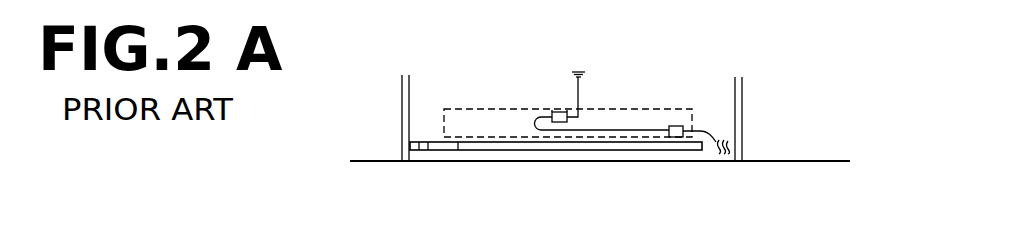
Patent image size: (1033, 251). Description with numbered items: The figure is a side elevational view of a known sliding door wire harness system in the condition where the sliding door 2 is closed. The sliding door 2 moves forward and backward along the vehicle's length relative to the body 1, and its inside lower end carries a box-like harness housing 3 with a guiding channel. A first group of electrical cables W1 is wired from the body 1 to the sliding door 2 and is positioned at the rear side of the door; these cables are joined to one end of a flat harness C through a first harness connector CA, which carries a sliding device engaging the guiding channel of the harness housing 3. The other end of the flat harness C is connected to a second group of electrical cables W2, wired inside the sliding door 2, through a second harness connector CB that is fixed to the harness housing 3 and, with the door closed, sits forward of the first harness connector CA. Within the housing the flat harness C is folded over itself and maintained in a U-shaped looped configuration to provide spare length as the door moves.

The vehicle body 1 is at (383, 145).
The sliding door 2 is at (708, 156).
The harness housing 3 is at (505, 108).
The flat harness C is at (630, 130).
The first harness connector CA is at (675, 126).
The second harness connector CB is at (558, 122).
The first group of electrical cables W1 is at (710, 133).
The second group of electrical cables W2 is at (578, 97).